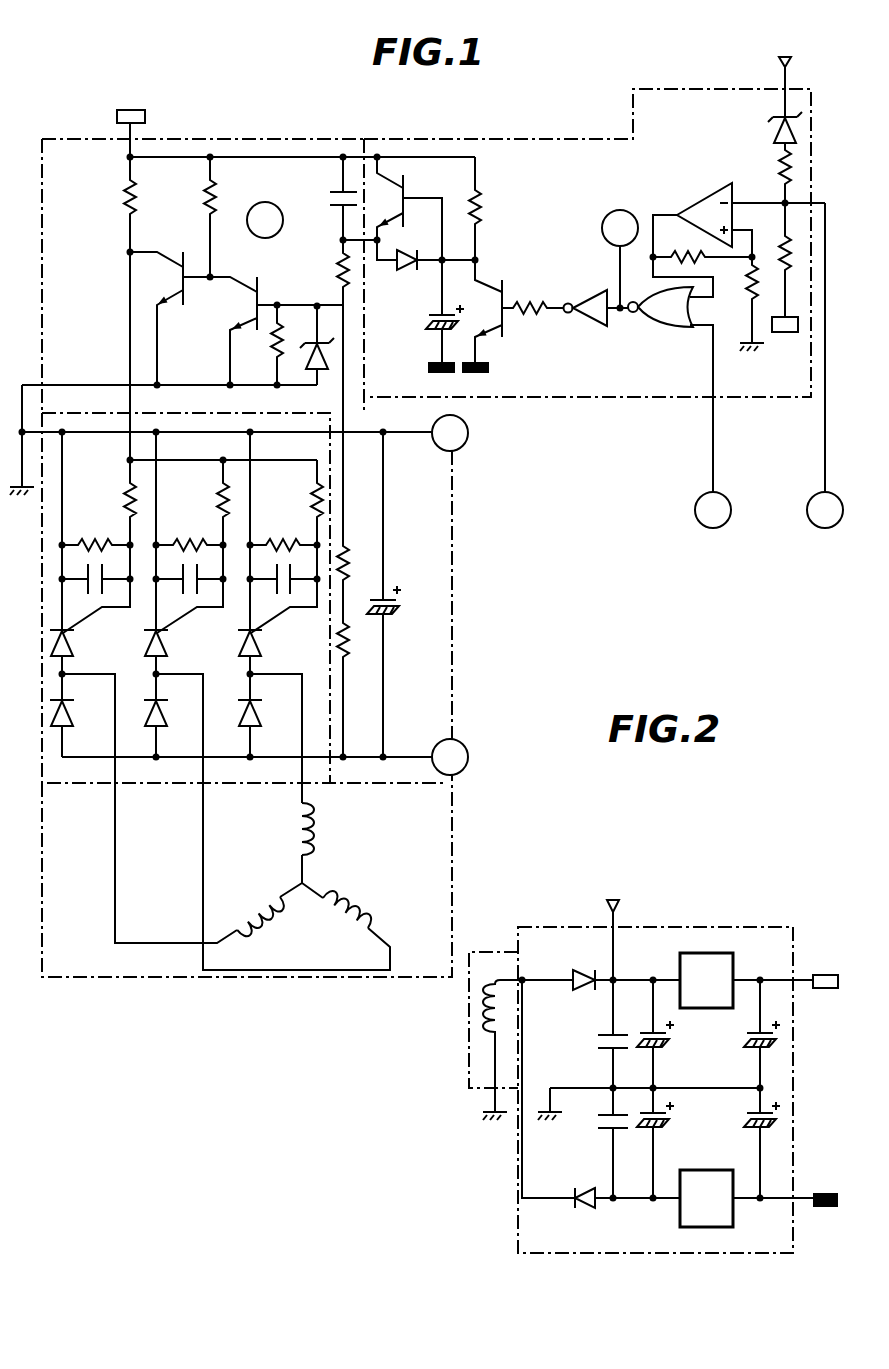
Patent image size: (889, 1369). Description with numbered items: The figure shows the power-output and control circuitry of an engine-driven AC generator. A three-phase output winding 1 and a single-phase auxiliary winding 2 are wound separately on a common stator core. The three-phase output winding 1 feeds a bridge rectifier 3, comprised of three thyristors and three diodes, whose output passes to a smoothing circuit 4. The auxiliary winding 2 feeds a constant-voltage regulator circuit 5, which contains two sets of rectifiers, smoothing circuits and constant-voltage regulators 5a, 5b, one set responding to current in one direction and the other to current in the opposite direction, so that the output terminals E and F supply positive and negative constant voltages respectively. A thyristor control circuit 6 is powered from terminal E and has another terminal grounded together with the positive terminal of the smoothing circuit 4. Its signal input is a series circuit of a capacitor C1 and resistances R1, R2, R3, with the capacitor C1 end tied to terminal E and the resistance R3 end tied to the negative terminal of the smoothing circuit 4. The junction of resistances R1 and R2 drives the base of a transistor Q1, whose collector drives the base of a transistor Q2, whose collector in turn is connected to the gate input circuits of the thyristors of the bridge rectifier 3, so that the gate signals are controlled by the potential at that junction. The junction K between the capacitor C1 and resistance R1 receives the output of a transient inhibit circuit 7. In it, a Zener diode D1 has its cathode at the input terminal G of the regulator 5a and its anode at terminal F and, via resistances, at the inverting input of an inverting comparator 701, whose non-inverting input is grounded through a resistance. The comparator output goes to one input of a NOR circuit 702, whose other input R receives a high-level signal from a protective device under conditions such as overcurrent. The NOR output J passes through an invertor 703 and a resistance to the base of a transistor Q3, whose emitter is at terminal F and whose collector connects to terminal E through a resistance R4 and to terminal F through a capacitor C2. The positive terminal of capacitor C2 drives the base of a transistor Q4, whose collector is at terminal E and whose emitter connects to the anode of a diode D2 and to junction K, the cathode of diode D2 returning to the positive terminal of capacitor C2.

In FIG. 1, the three-phase output winding 1 is at (451, 829).
In FIG. 2, the single-phase auxiliary winding 2 is at (469, 1073).
In FIG. 1, the bridge rectifier 3 is at (42, 702).
In FIG. 1, the smoothing circuit 4 is at (455, 716).
In FIG. 2, the constant-voltage regulator circuit 5 is at (662, 927).
In FIG. 2, the constant-voltage regulator 5a is at (656, 850).
In FIG. 2, the constant-voltage regulator 5b is at (651, 1276).
In FIG. 1, the thyristor control circuit 6 is at (90, 139).
In FIG. 1, the transient inhibit circuit 7 is at (537, 133).
In FIG. 1, the inverting comparator 701 is at (712, 197).
In FIG. 1, the NOR circuit 702 is at (688, 330).
In FIG. 1, the invertor 703 is at (592, 321).
In FIG. 1, the transistor Q1 is at (276, 331).
In FIG. 1, the transistor Q2 is at (170, 318).
In FIG. 1, the transistor Q3 is at (519, 306).
In FIG. 1, the transistor Q4 is at (413, 209).
In FIG. 1, the resistance R1 is at (325, 326).
In FIG. 1, the resistance R2 is at (345, 563).
In FIG. 1, the resistance R3 is at (345, 637).
In FIG. 1, the resistance R4 is at (494, 208).
In FIG. 1, the capacitor C1 is at (328, 198).
In FIG. 1, the capacitor C2 is at (429, 311).
In FIG. 1, the Zener diode D1 is at (770, 179).
In FIG. 1, the diode D2 is at (426, 242).